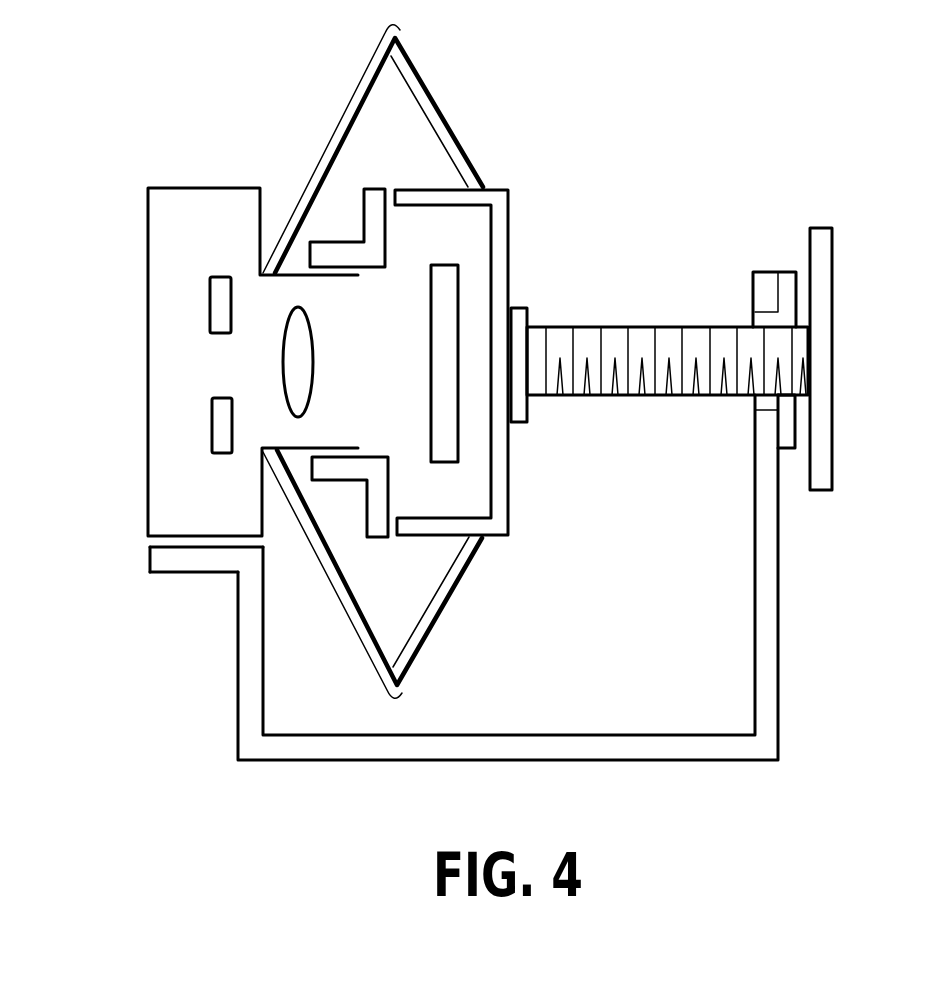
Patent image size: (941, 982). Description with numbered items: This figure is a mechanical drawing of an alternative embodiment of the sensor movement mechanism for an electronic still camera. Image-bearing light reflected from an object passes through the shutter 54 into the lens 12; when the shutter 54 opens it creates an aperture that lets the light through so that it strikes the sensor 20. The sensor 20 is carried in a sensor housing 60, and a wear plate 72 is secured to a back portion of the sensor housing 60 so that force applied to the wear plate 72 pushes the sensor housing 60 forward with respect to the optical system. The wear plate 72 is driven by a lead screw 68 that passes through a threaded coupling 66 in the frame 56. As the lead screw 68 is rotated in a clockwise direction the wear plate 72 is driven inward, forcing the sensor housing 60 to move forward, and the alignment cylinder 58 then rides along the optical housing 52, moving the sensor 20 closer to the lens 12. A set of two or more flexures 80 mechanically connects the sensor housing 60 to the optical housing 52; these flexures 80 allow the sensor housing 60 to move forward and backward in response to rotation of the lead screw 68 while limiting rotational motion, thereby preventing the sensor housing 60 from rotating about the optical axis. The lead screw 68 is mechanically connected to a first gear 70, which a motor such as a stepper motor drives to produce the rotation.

The lens 12 is at (303, 337).
The sensor 20 is at (436, 353).
The optical housing 52 is at (198, 536).
The shutter 54 is at (208, 301).
The frame 56 is at (402, 762).
The alignment cylinder 58 is at (338, 474).
The sensor housing 60 is at (413, 188).
The threaded coupling 66 is at (787, 272).
The lead screw 68 is at (797, 343).
The first gear 70 is at (827, 258).
The wear plate 72 is at (520, 308).
The flexures 80 is at (457, 130).